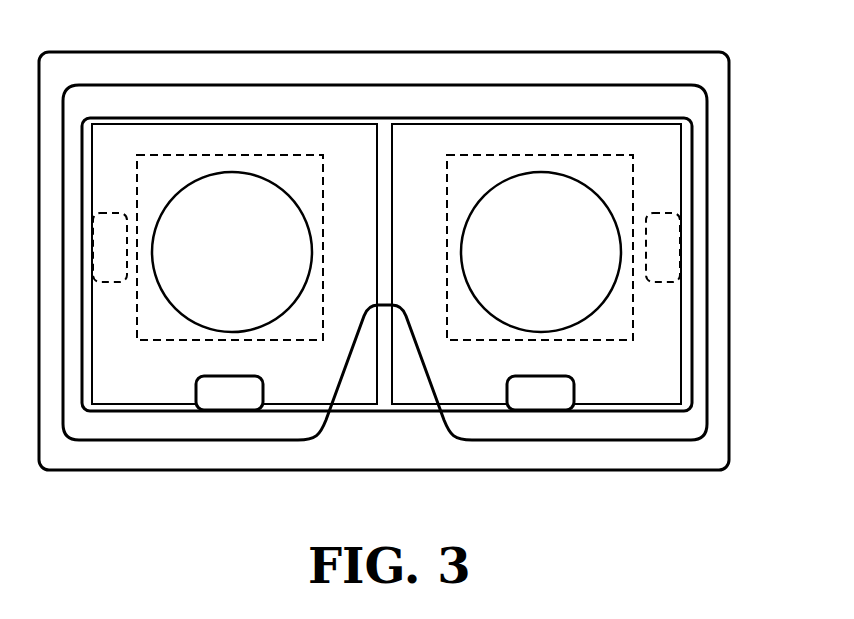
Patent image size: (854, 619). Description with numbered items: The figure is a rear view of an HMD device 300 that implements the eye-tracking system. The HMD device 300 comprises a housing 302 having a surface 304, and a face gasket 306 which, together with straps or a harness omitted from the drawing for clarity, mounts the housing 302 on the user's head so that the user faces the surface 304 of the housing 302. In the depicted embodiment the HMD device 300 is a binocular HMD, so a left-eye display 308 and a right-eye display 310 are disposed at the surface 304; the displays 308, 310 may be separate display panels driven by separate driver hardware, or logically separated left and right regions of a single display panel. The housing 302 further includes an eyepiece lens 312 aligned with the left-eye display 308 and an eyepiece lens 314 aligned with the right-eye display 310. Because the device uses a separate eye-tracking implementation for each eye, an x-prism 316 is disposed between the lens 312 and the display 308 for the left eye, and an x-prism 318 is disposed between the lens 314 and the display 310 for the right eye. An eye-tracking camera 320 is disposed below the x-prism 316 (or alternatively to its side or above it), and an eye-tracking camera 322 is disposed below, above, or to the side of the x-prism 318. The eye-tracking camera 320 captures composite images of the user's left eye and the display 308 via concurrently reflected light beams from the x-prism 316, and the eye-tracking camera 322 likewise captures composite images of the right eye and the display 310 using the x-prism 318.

The HMD device 300 is at (531, 40).
The housing 302 is at (729, 229).
The surface 304 is at (100, 462).
The face gasket 306 is at (263, 442).
The left-eye display 308 is at (350, 392).
The right-eye display 310 is at (422, 392).
The eyepiece lens 312 is at (312, 252).
The eyepiece lens 314 is at (462, 255).
The x-prism 316 is at (323, 170).
The x-prism 318 is at (447, 175).
The eye-tracking camera 320 is at (112, 213).
The eye-tracking camera 322 is at (658, 214).